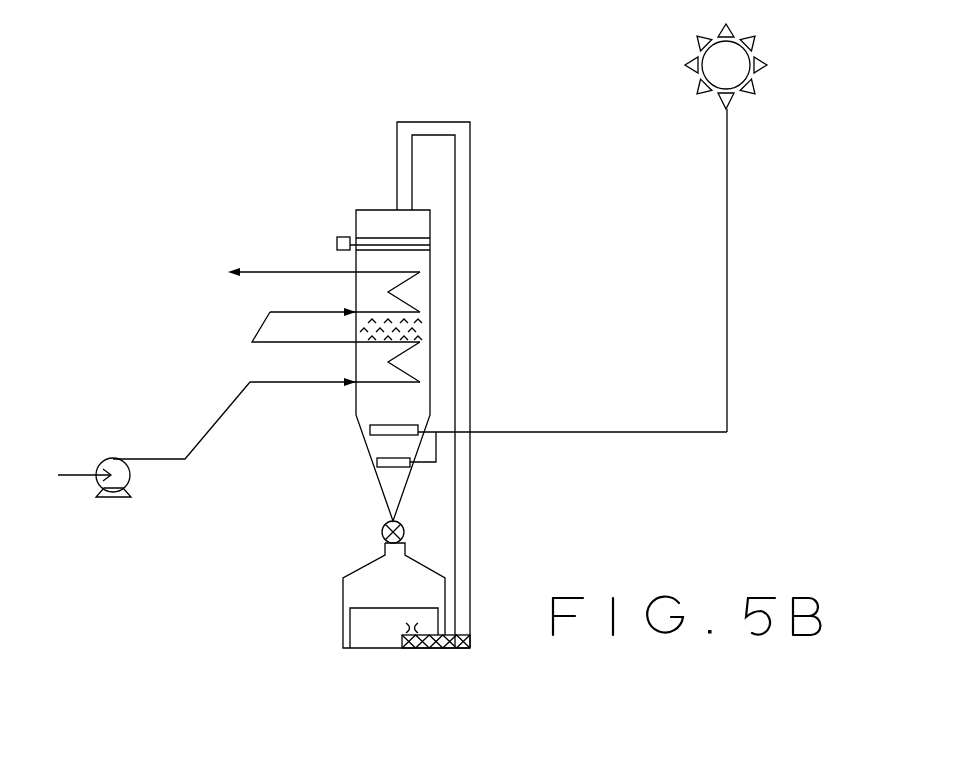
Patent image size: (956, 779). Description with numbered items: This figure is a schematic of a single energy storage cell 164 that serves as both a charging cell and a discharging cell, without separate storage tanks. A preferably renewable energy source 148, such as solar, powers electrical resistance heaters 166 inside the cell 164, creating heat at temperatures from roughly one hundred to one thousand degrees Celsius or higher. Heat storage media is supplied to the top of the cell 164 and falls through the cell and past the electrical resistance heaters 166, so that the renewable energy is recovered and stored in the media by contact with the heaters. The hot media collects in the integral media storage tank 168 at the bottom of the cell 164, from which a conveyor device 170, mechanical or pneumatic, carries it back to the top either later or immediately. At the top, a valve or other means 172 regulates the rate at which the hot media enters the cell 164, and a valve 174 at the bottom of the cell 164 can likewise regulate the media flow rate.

The renewable energy source 148 is at (733, 52).
The cell 164 is at (380, 210).
The electrical resistance heaters 166 is at (408, 425).
The integral media storage tank 168 is at (343, 628).
The conveyor device 170 is at (470, 240).
The valve 172 is at (337, 243).
The valve 174 is at (382, 531).